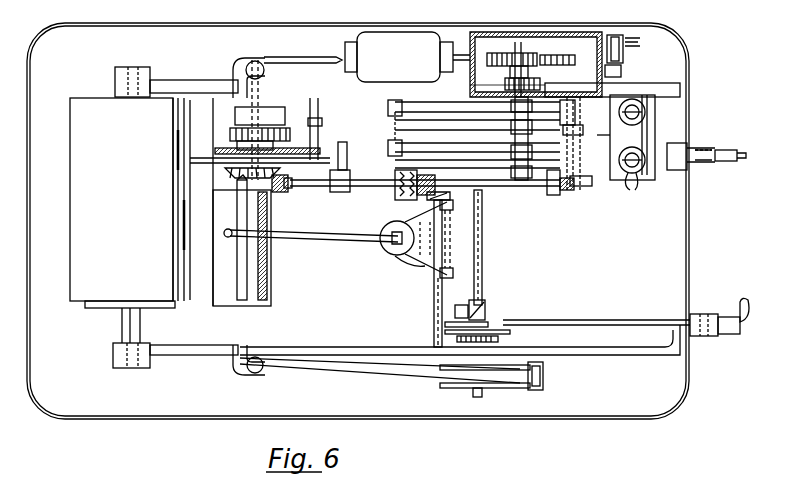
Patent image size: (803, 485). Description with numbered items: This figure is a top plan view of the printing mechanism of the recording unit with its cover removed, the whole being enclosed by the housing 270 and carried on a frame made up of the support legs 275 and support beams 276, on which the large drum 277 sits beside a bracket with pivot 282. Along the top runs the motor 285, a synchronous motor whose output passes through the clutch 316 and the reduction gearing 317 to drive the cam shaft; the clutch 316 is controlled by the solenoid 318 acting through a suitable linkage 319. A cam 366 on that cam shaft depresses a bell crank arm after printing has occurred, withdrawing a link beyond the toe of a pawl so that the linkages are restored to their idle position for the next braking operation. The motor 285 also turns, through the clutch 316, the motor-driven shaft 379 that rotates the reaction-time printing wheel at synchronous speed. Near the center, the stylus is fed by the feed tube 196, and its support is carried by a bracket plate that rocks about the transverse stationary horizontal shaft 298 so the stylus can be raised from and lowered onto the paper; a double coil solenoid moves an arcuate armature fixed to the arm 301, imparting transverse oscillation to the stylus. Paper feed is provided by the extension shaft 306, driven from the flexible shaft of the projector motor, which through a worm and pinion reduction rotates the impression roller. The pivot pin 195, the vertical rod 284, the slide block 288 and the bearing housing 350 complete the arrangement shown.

The housing 270 is at (508, 420).
The support leg 275 is at (139, 330).
The support beam 276 is at (181, 80).
The drum 277 is at (212, 238).
The bracket with pivot 282 is at (255, 60).
The vertical rod 284 is at (485, 273).
The motor 285 is at (425, 32).
The slide block 288 is at (490, 311).
The pivot pin 195 is at (226, 231).
The feed tube 196 is at (312, 240).
The transverse stationary horizontal shaft 298 is at (433, 298).
The arm 301 is at (393, 252).
The extension shaft 306 is at (627, 320).
The clutch 316 is at (506, 82).
The reduction gearing 317 is at (542, 54).
The solenoid 318 is at (617, 35).
The linkage 319 is at (621, 71).
The bearing housing 350 is at (645, 108).
The cam 366 is at (565, 113).
The shaft 379 is at (584, 185).